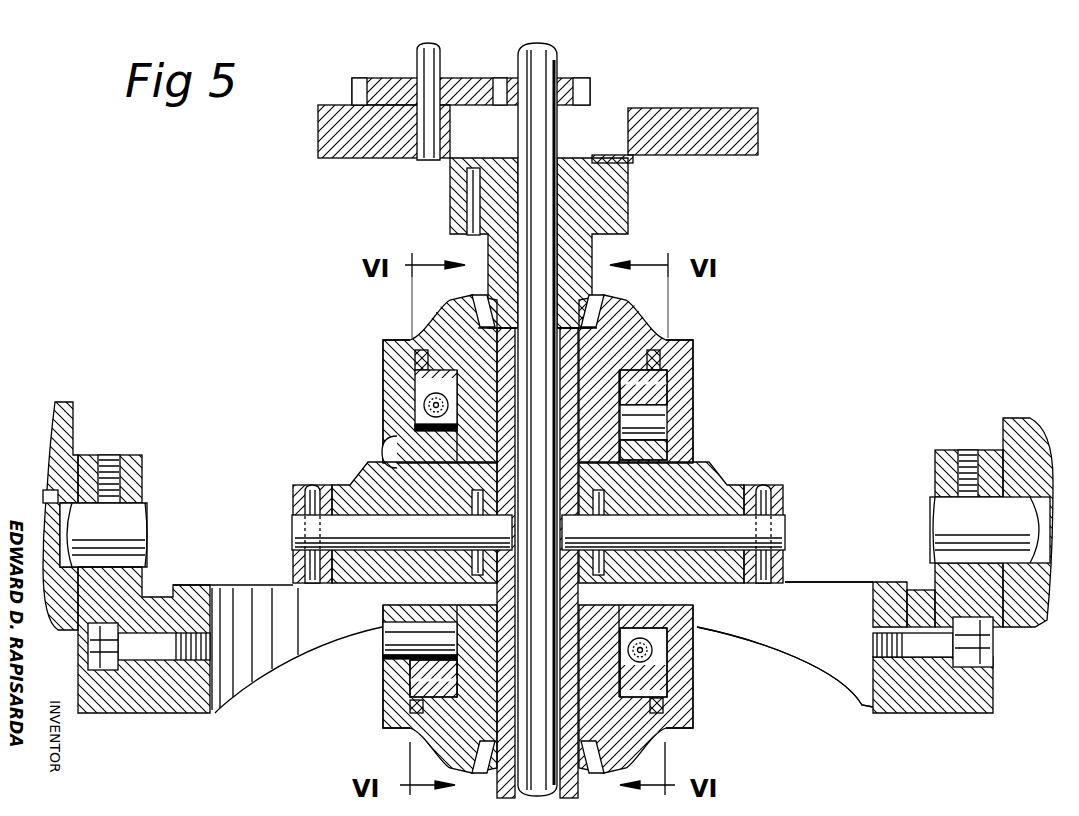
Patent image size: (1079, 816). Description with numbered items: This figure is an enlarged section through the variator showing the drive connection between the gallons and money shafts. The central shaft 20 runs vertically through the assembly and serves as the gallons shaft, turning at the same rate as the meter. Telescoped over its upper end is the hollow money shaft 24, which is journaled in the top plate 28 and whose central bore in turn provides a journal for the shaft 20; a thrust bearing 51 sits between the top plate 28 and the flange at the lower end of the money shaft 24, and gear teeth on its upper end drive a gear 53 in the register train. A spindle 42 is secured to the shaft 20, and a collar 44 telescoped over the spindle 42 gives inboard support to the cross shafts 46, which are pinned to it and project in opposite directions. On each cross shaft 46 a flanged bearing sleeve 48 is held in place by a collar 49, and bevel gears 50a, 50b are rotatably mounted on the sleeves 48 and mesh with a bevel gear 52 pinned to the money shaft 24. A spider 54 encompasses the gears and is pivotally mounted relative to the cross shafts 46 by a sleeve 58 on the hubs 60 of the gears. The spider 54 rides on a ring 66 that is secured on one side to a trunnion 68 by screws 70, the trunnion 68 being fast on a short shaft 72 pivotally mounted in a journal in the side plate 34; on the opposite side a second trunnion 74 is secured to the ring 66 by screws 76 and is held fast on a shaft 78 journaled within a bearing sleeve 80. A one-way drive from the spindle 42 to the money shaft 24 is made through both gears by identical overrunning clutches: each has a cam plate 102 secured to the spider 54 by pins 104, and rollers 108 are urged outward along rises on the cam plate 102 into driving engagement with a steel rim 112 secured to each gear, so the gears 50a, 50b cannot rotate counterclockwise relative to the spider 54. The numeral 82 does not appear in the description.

The central shaft 20 is at (560, 56).
The money shaft 24 is at (578, 75).
The top plate 28 is at (694, 107).
The side plate 34 is at (1017, 420).
The spindle 42 is at (503, 519).
The collar 44 is at (488, 483).
The cross shafts 46 is at (787, 522).
The flanged bearing sleeve 48 is at (340, 483).
The collar 49 is at (294, 488).
The bevel gear 50a is at (437, 310).
The bevel gear 50b is at (615, 302).
The thrust bearing 51 is at (634, 163).
The bevel gear 52 is at (593, 262).
The gear 53 is at (357, 78).
The spider 54 is at (395, 338).
The sleeve 58 is at (397, 450).
The hubs 60 is at (369, 470).
The ring 66 is at (882, 582).
The trunnion 68 is at (932, 710).
The screws 70 is at (994, 652).
The short shaft 72 is at (928, 508).
The second trunnion 74 is at (133, 712).
The screws 76 is at (87, 658).
The shaft 78 is at (150, 516).
The bearing sleeve 80 is at (48, 462).
The support body 82 is at (75, 410).
The cam plate 102 is at (420, 416).
The pins 104 is at (698, 427).
The rollers 108 is at (415, 383).
The steel rim 112 is at (412, 355).